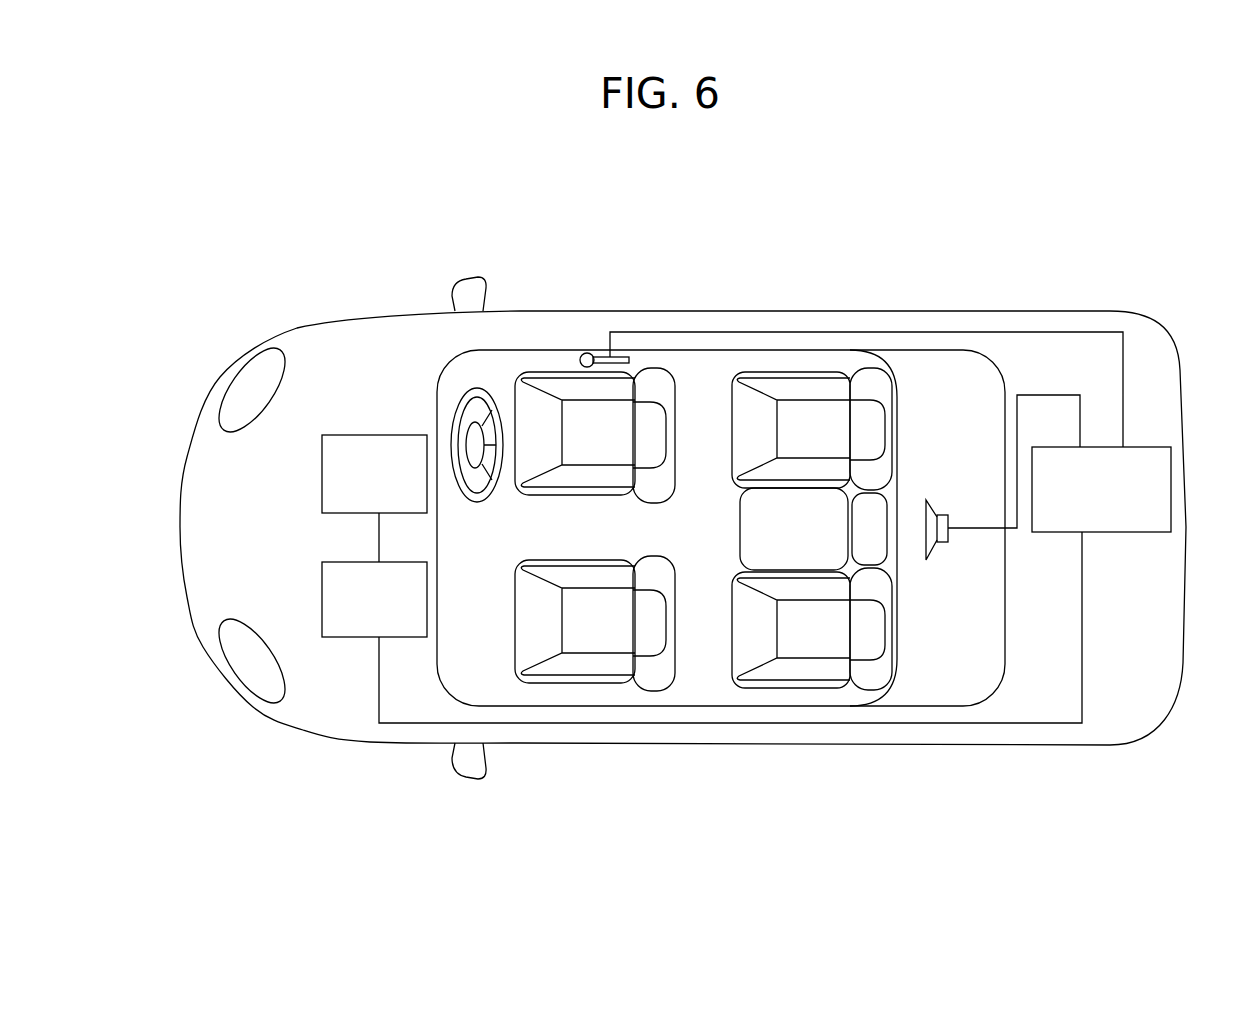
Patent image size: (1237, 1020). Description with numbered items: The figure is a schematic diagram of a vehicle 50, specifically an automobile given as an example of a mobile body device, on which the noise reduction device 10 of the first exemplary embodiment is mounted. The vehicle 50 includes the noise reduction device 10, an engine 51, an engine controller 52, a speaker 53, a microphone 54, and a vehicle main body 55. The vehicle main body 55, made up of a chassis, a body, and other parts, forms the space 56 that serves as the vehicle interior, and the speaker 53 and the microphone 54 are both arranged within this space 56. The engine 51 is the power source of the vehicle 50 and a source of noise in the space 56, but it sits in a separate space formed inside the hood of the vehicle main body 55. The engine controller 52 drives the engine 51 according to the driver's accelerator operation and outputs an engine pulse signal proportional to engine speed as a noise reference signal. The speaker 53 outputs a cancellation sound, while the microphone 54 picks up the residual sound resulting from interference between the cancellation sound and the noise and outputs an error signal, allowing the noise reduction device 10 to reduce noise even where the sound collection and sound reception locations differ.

The noise reduction device 10 is at (1142, 446).
The vehicle 50 is at (1172, 317).
The engine 51 is at (322, 461).
The engine controller 52 is at (322, 600).
The speaker 53 is at (932, 505).
The microphone 54 is at (603, 355).
The vehicle main body 55 is at (785, 312).
The space 56 is at (700, 657).